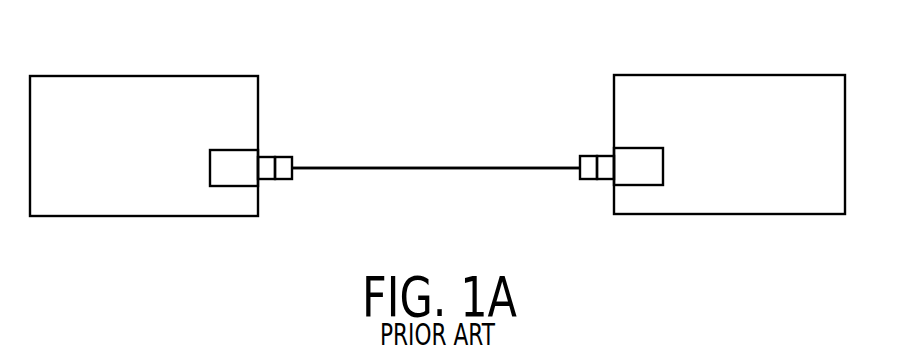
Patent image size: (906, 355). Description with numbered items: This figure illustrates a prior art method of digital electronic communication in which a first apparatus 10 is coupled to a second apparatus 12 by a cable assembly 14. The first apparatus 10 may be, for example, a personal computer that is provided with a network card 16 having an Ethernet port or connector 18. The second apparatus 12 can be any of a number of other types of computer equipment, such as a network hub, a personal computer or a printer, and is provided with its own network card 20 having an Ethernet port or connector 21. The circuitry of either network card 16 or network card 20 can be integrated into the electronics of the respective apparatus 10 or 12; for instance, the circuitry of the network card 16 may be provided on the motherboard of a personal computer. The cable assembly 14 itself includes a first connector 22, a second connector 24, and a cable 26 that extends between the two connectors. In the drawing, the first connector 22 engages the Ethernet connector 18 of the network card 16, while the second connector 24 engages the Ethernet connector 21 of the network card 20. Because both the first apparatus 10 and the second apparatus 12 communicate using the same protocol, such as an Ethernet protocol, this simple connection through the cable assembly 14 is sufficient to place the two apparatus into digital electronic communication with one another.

The first apparatus 10 is at (183, 76).
The second apparatus 12 is at (668, 75).
The cable assembly 14 is at (424, 150).
The network card 16 is at (225, 187).
The Ethernet port (connector) 18 is at (263, 157).
The network card 20 is at (640, 187).
The Ethernet port (connector) 21 is at (610, 154).
The first connector 22 is at (285, 181).
The second connector 24 is at (585, 180).
The cable 26 is at (510, 168).